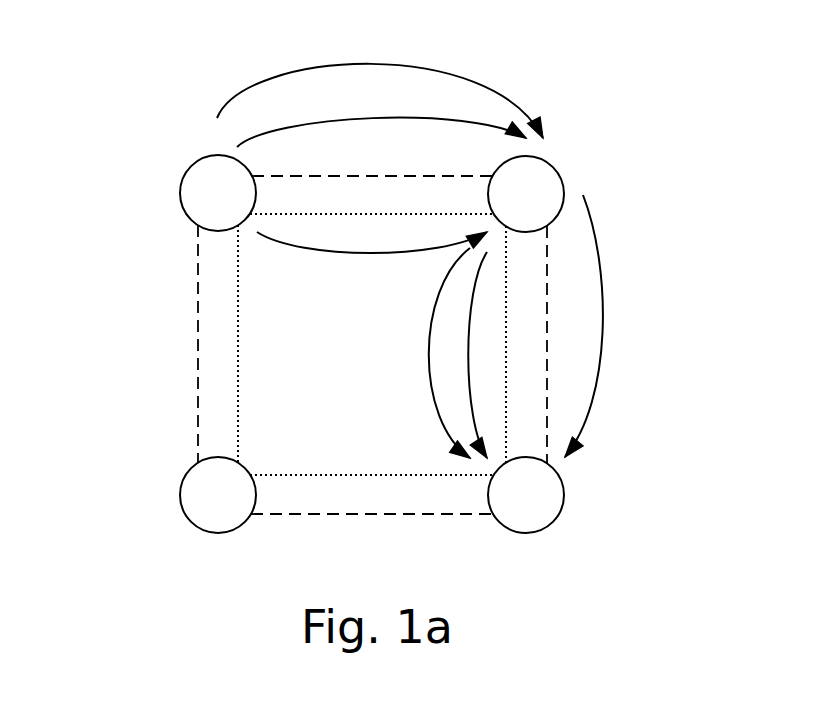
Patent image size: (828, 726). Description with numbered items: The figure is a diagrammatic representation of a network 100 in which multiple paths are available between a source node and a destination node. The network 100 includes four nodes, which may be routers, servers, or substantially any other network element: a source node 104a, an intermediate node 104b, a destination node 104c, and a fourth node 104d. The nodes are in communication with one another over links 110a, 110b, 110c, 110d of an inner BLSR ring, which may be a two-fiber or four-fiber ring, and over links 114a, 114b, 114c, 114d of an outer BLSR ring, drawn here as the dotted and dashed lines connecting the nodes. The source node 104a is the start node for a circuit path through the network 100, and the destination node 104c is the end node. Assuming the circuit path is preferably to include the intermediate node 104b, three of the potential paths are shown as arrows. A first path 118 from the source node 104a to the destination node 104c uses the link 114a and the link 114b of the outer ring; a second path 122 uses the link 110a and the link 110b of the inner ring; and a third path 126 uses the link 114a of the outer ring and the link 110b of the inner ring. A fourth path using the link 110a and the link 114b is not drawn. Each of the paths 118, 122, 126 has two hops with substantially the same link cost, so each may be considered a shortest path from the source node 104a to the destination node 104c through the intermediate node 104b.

The network 100 is at (128, 496).
The source node 104a is at (237, 158).
The intermediate node 104b is at (560, 177).
The destination node 104c is at (563, 497).
The node 104d is at (222, 531).
The link of inner BLSR ring 110a is at (370, 214).
The link of inner BLSR ring 110b is at (506, 408).
The link of inner BLSR ring 110c is at (372, 478).
The link of inner BLSR ring 110d is at (238, 365).
The link of outer BLSR ring 114a is at (340, 176).
The link of outer BLSR ring 114b is at (558, 284).
The link of outer BLSR ring 114c is at (312, 515).
The link of outer BLSR ring 114d is at (198, 382).
The first path 118 is at (403, 120).
The second path 122 is at (295, 250).
The third path 126 is at (460, 70).